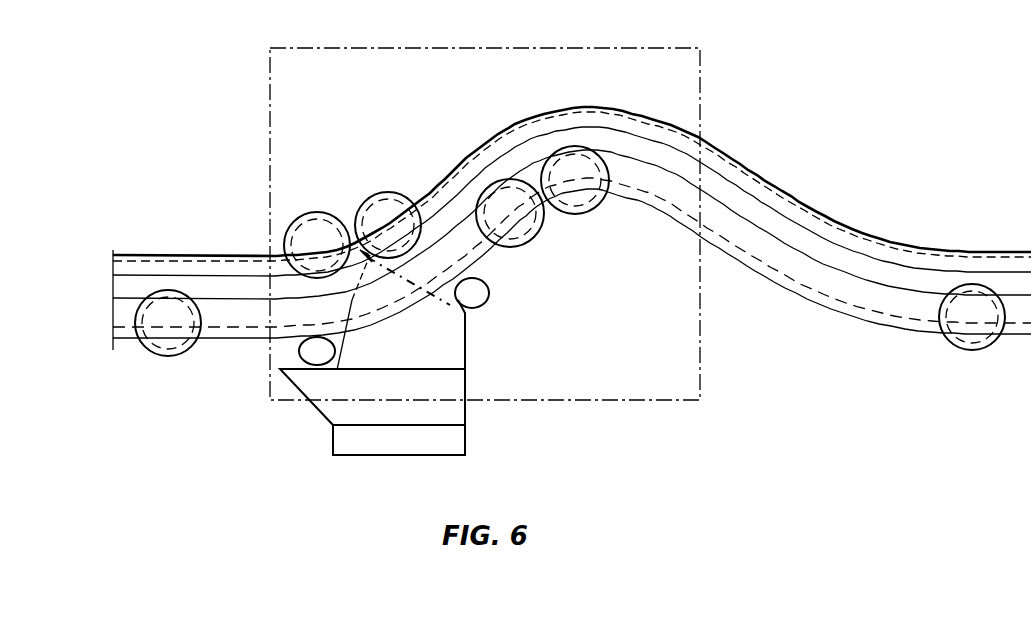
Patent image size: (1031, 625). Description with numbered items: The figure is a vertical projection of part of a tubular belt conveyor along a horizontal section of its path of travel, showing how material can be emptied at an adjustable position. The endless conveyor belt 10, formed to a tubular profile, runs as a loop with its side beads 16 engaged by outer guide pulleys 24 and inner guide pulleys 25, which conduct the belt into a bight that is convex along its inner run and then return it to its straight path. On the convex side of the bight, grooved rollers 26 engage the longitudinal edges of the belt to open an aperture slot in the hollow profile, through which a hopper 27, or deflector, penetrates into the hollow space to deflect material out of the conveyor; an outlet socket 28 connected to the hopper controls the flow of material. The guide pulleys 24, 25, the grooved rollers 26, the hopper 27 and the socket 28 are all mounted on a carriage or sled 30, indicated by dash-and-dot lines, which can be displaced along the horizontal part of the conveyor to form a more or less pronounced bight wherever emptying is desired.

The conveyor belt 10 is at (813, 218).
The beads 16 is at (757, 207).
The outer guide pulleys 24 is at (318, 212).
The inner guide pulleys 25 is at (172, 357).
The grooved rollers 26 is at (300, 348).
The hopper 27 is at (468, 333).
The outlet socket 28 is at (312, 405).
The carriage or sled 30 is at (700, 296).